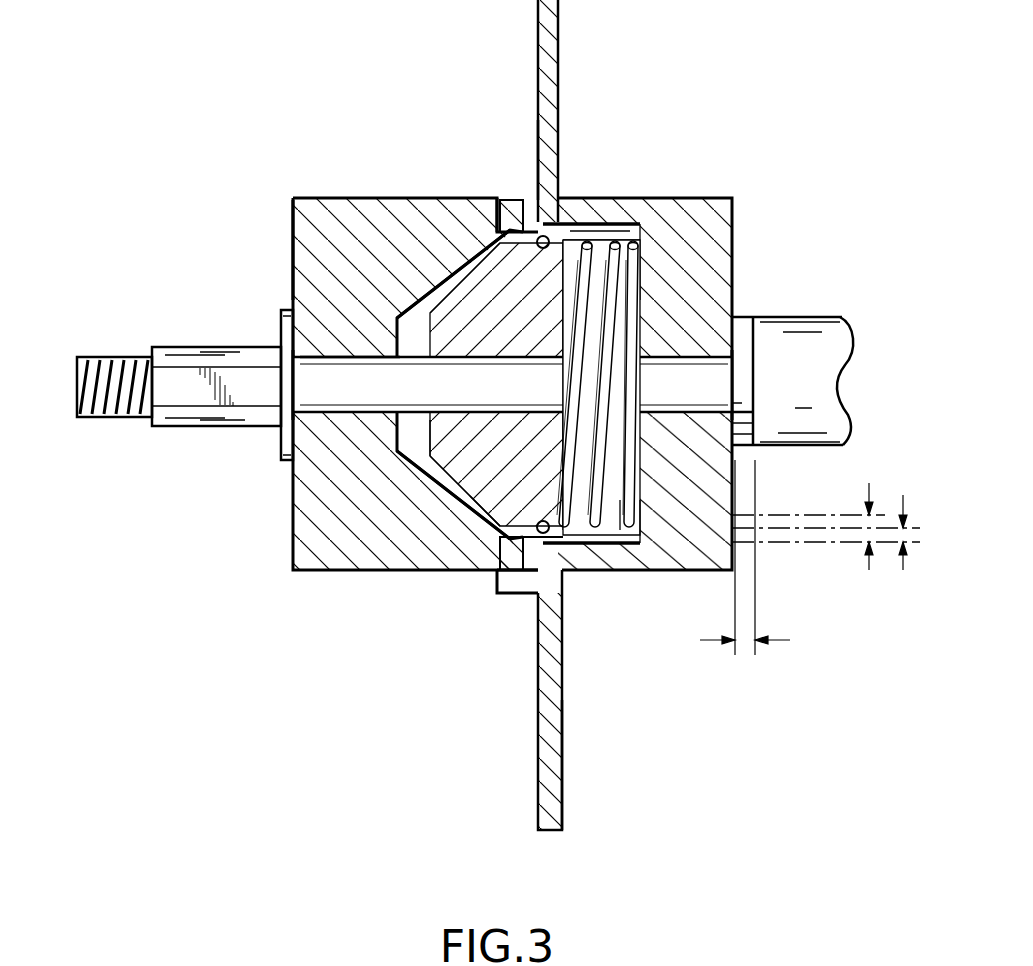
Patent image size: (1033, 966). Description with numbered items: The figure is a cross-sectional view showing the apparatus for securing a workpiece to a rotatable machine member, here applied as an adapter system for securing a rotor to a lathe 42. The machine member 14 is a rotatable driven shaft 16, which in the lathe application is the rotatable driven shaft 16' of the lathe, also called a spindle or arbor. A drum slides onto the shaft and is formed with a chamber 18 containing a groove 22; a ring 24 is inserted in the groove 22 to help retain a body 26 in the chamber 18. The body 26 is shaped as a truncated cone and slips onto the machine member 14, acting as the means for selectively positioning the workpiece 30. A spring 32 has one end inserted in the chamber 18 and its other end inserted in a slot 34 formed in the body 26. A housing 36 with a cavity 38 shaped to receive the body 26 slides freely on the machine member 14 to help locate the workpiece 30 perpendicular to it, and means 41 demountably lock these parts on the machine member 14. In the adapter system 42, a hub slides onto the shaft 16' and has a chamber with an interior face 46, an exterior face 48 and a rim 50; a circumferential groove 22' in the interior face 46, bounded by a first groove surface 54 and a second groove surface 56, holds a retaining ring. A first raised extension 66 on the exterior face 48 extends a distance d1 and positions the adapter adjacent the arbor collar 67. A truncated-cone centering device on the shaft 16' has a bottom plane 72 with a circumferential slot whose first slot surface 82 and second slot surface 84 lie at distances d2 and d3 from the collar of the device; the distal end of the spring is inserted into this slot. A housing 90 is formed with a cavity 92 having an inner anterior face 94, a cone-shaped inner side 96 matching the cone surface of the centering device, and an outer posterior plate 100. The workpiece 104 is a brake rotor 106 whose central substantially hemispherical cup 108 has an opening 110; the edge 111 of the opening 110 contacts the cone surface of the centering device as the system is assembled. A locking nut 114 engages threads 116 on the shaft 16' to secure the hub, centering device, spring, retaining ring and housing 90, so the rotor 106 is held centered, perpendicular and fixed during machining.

The machine member 14 is at (327, 400).
The rotatable driven shaft 16 is at (416, 391).
The rotatable driven shaft of a lathe 16' is at (742, 353).
The chamber 18 is at (620, 530).
The groove 22 is at (591, 337).
The groove 22' is at (517, 621).
The ring 24 is at (530, 535).
The body 26 is at (495, 528).
The workpiece 30 is at (560, 10).
The spring 32 is at (640, 222).
The slot 34 is at (596, 240).
The housing 36 is at (325, 197).
The cavity 38 is at (478, 500).
The means for demountably locking 41 is at (282, 348).
The adapter system for securing a rotor to a lathe 42 is at (680, 98).
The interior face 46 is at (640, 530).
The exterior face 48 is at (738, 552).
The rim 50 is at (498, 205).
The first groove surface 54 is at (522, 200).
The second groove surface 56 is at (543, 547).
The first raised extension 66 is at (747, 342).
The arbor collar 67 is at (837, 335).
The bottom plane 72 is at (568, 282).
The first slot surface 82 is at (580, 510).
The second slot surface 84 is at (520, 545).
The housing 90 is at (292, 255).
The cavity 92 is at (397, 328).
The inner anterior face 94 is at (427, 458).
The inner side 96 is at (440, 470).
The outer posterior plate 100 is at (292, 215).
The workpiece 104 is at (538, 752).
The brake rotor 106 is at (562, 790).
The substantially hemispherical cup 108 is at (537, 170).
The opening 110 is at (462, 230).
The edge 111 is at (490, 550).
The locking nut 114 is at (187, 347).
The threads 116 is at (110, 417).
The distance d1 is at (758, 557).
The distance d2 is at (905, 550).
The distance d3 is at (870, 546).